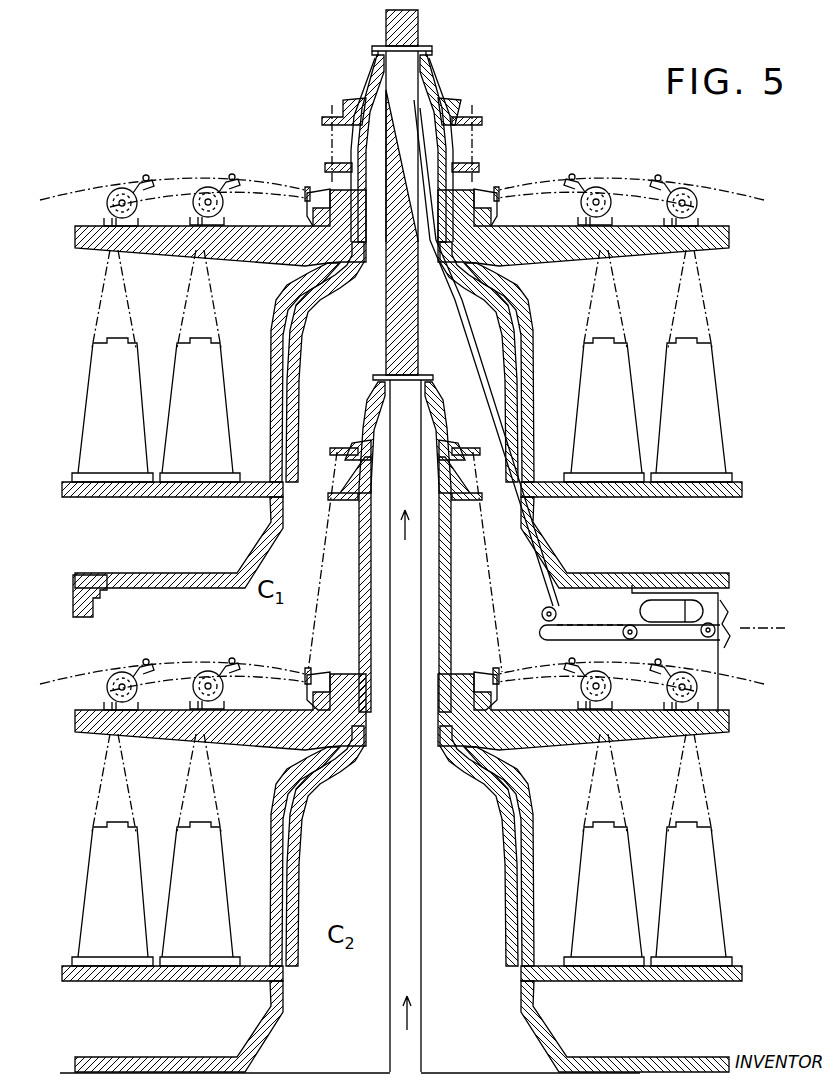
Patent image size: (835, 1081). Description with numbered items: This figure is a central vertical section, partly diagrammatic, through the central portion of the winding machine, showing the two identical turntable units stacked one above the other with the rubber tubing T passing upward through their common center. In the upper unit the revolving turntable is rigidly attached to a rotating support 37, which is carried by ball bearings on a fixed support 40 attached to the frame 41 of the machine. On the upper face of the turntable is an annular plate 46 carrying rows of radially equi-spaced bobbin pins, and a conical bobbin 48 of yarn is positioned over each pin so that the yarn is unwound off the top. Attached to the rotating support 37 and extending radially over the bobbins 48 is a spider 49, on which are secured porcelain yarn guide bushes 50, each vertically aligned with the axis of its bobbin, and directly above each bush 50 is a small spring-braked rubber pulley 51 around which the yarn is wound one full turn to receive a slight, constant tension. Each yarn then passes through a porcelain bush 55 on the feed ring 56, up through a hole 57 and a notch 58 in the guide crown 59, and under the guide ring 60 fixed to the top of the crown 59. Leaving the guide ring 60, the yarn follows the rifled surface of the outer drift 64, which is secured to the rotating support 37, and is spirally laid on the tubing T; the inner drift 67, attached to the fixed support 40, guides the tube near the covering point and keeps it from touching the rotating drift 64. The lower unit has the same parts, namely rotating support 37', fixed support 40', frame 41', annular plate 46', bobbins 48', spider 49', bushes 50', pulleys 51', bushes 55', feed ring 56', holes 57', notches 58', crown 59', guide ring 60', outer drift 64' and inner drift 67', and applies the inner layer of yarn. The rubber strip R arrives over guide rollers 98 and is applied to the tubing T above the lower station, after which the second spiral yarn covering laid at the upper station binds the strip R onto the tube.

The rotating support 37 is at (401, 372).
The fixed support 40 is at (402, 362).
The frame 41 is at (401, 557).
The annular plate 46 is at (402, 508).
The conical bobbin 48 is at (402, 366).
The spider 49 is at (402, 241).
The yarn guide bush 50 is at (401, 207).
The rubber pulley 51 is at (397, 161).
The porcelain bush 55 is at (404, 173).
The feed ring 56 is at (402, 203).
The hole 57 is at (327, 140).
The notch 58 is at (498, 102).
The guide crown 59 is at (498, 143).
The guide ring 60 is at (469, 99).
The outer drift 64 is at (460, 142).
The inner drift 67 is at (387, 144).
The guide rollers 98 is at (627, 628).
The rotating support 37' is at (407, 856).
The fixed support 40' is at (402, 846).
The frame 41' is at (402, 1026).
The annular plate 46' is at (402, 995).
The conical bobbin 48' is at (402, 850).
The spider 49' is at (402, 727).
The yarn guide bush 50' is at (401, 691).
The rubber pulley 51' is at (455, 667).
The porcelain bush 55' is at (400, 648).
The feed ring 56' is at (402, 687).
The hole 57' is at (405, 562).
The notch 58' is at (461, 429).
The guide crown 59' is at (389, 478).
The guide ring 60' is at (344, 435).
The outer drift 64' is at (449, 544).
The inner drift 67' is at (351, 547).
The rubber tubing T is at (418, 34).
The rubber strip R is at (462, 327).